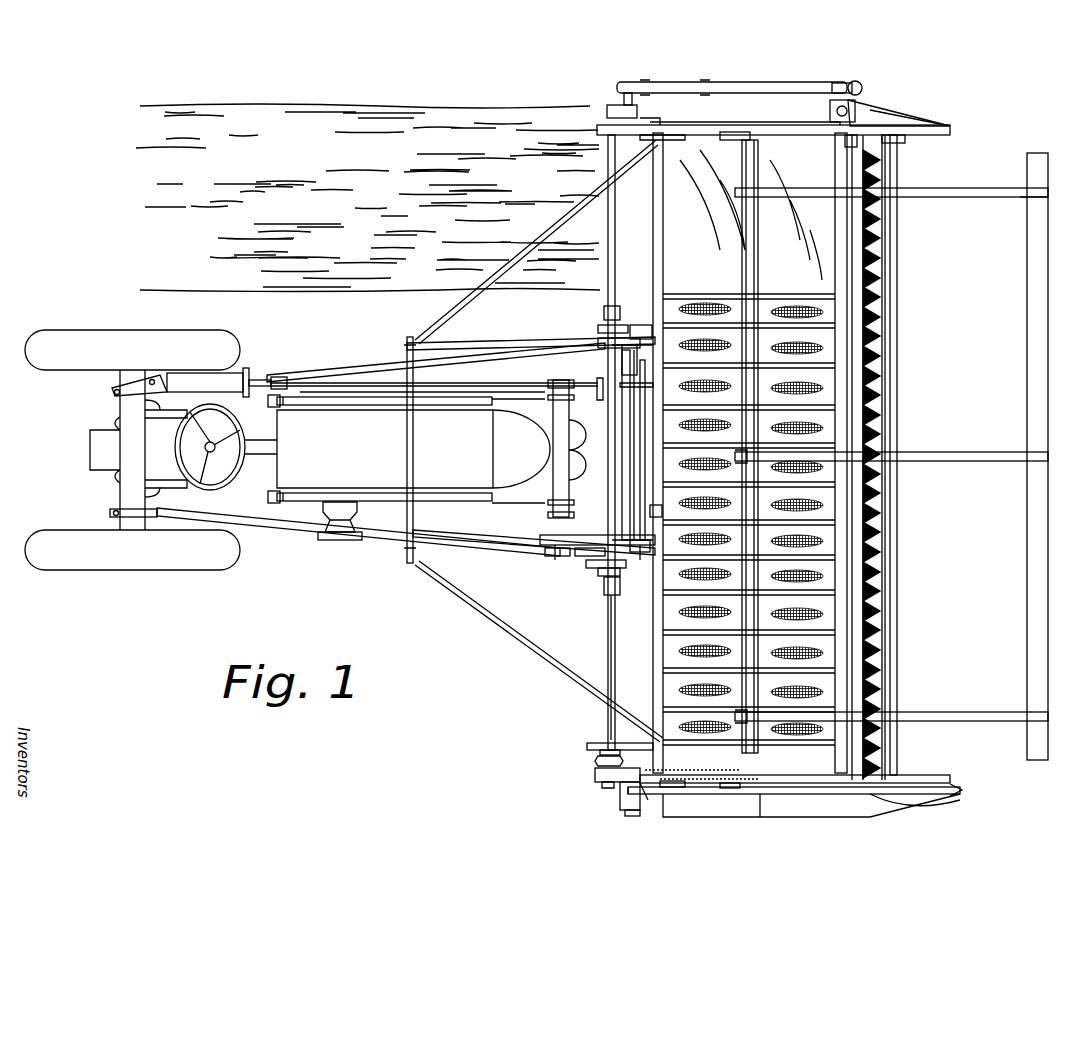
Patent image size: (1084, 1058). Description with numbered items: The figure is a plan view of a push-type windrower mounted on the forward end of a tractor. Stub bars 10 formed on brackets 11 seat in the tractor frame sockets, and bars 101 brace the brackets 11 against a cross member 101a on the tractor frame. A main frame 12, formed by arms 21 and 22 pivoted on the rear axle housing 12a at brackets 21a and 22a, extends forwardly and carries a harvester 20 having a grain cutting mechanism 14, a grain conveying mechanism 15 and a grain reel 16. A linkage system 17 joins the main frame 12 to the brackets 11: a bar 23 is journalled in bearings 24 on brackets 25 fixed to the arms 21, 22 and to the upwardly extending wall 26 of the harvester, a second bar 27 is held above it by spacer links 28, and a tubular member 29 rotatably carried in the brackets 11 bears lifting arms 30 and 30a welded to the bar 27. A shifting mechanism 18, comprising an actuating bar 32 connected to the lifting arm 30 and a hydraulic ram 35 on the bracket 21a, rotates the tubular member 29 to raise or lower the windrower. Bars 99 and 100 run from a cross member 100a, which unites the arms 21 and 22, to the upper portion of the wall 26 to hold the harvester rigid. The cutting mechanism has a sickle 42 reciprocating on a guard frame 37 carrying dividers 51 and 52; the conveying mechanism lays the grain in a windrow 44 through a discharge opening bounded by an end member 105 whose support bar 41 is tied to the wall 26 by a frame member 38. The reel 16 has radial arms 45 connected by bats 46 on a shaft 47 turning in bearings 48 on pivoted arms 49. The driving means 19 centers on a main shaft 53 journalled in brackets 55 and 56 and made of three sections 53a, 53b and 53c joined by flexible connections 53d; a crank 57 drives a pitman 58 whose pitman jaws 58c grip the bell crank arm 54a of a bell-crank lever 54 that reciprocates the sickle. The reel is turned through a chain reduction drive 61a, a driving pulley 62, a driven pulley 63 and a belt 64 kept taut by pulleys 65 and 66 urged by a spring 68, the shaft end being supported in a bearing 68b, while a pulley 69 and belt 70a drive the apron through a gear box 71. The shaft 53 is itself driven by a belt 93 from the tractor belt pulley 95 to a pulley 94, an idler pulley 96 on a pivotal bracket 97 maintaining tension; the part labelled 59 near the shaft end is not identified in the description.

The stub bars 10 is at (500, 482).
The brackets 11 is at (528, 482).
The main frame 12 is at (282, 374).
The rear axle housing 12a is at (118, 420).
The grain cutting mechanism 14 is at (870, 348).
The grain conveying mechanism 15 is at (830, 388).
The grain reel 16 is at (1022, 380).
The linkage system 17 is at (562, 380).
The shifting mechanism 18 is at (338, 382).
The driving means 19 is at (588, 568).
The harvester 20 is at (1006, 119).
The arm 21 is at (373, 368).
The bracket 21a is at (117, 390).
The arm 22 is at (296, 530).
The bracket 22a is at (110, 512).
The bar 23 is at (640, 450).
The bearings 24 is at (638, 566).
The brackets 25 is at (644, 316).
The upwardly extending wall 26 is at (656, 685).
The second bar 27 is at (626, 492).
The spacer links 28 is at (650, 554).
The tubular member 29 is at (572, 450).
The lifting arm 30 is at (572, 386).
The lifting arm 30a is at (576, 494).
The actuating bar 32 is at (472, 388).
The hydraulic ram 35 is at (208, 390).
The guard frame 37 is at (862, 258).
The frame member 38 is at (662, 228).
The support bar 41 is at (848, 146).
The sickle 42 is at (879, 218).
The windrow 44 is at (408, 141).
The arms 45 is at (994, 193).
The bats 46 is at (1027, 300).
The shaft 47 is at (890, 183).
The bearings 48 is at (895, 774).
The arms 49 is at (942, 774).
The divider 51 is at (916, 114).
The divider 52 is at (898, 806).
The main shaft 53 is at (591, 196).
The shaft section 53a is at (590, 376).
The shaft section 53b is at (610, 256).
The shaft section 53c is at (610, 652).
The flexible connections 53d is at (606, 598).
The bell-crank lever 54 is at (597, 128).
The bell crank arm 54a is at (860, 104).
The bracket 55 is at (606, 576).
The bracket 56 is at (592, 340).
The crank 57 is at (610, 110).
The pitman 58 is at (738, 82).
The pitman jaws 58c is at (856, 76).
The bearing block 59 is at (830, 110).
The chain reduction drive 61a is at (592, 784).
The driving pulley 62 is at (666, 788).
The driven pulley 63 is at (956, 792).
The belt 64 is at (796, 792).
The pulley 65 is at (762, 792).
The pulley 66 is at (728, 786).
The spring 68 is at (708, 772).
The bearing 68b is at (596, 762).
The pulley 69 is at (586, 740).
The belt 70a is at (587, 746).
The gear box 71 is at (620, 805).
The belt 93 is at (500, 532).
The pulley 94 is at (580, 556).
The pulley 95 is at (341, 540).
The idler pulley 96 is at (550, 556).
The pivotal bracket 97 is at (670, 520).
The bar 99 is at (498, 553).
The bar 100 is at (517, 634).
The cross member 100a is at (407, 543).
The bars 101 is at (460, 500).
The cross member 101a is at (282, 495).
The end member 105 is at (768, 122).